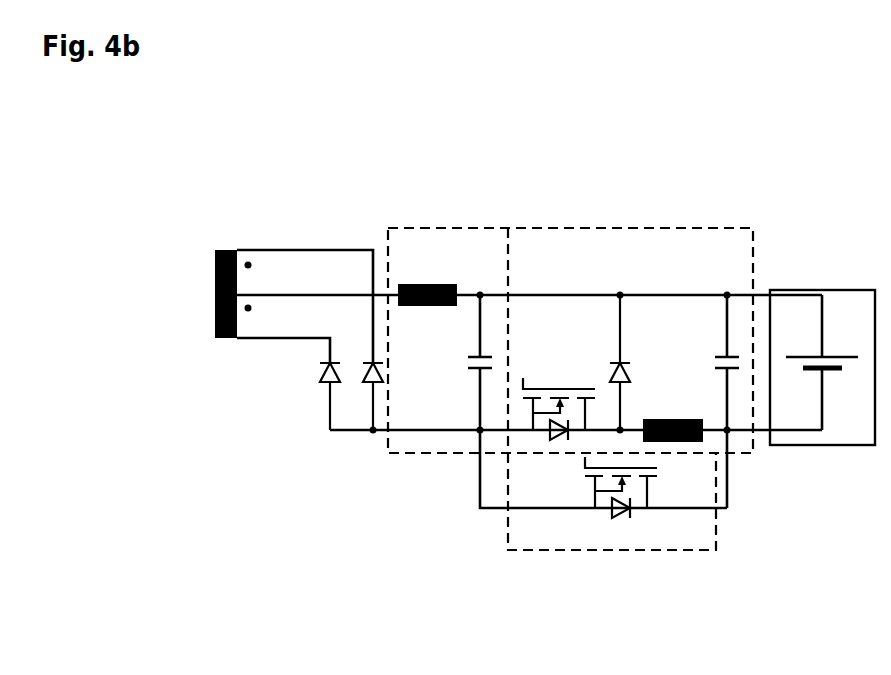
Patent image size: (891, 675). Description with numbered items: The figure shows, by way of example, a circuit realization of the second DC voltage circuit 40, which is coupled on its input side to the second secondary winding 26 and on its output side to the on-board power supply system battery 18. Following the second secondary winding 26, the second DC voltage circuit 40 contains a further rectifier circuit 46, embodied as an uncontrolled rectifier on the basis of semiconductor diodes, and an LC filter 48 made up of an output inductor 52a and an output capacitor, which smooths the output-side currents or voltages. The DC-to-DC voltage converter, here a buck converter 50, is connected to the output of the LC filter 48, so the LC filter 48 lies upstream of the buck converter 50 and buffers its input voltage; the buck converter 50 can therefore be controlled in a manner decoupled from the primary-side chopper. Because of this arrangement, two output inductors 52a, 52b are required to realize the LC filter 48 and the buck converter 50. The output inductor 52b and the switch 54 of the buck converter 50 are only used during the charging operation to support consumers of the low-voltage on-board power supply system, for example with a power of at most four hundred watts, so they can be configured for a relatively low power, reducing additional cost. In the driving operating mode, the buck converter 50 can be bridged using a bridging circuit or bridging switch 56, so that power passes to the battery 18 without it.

The on-board power supply system battery 18 is at (848, 296).
The second secondary winding 26 is at (230, 250).
The second DC voltage circuit 40 is at (387, 518).
The further rectifier circuit 46 is at (332, 440).
The LC filter 48 is at (487, 228).
The buck converter 50 is at (620, 228).
The output inductor 52a is at (433, 284).
The output inductor 52b is at (675, 443).
The switch 54 is at (560, 373).
The bridging switch 56 is at (602, 523).